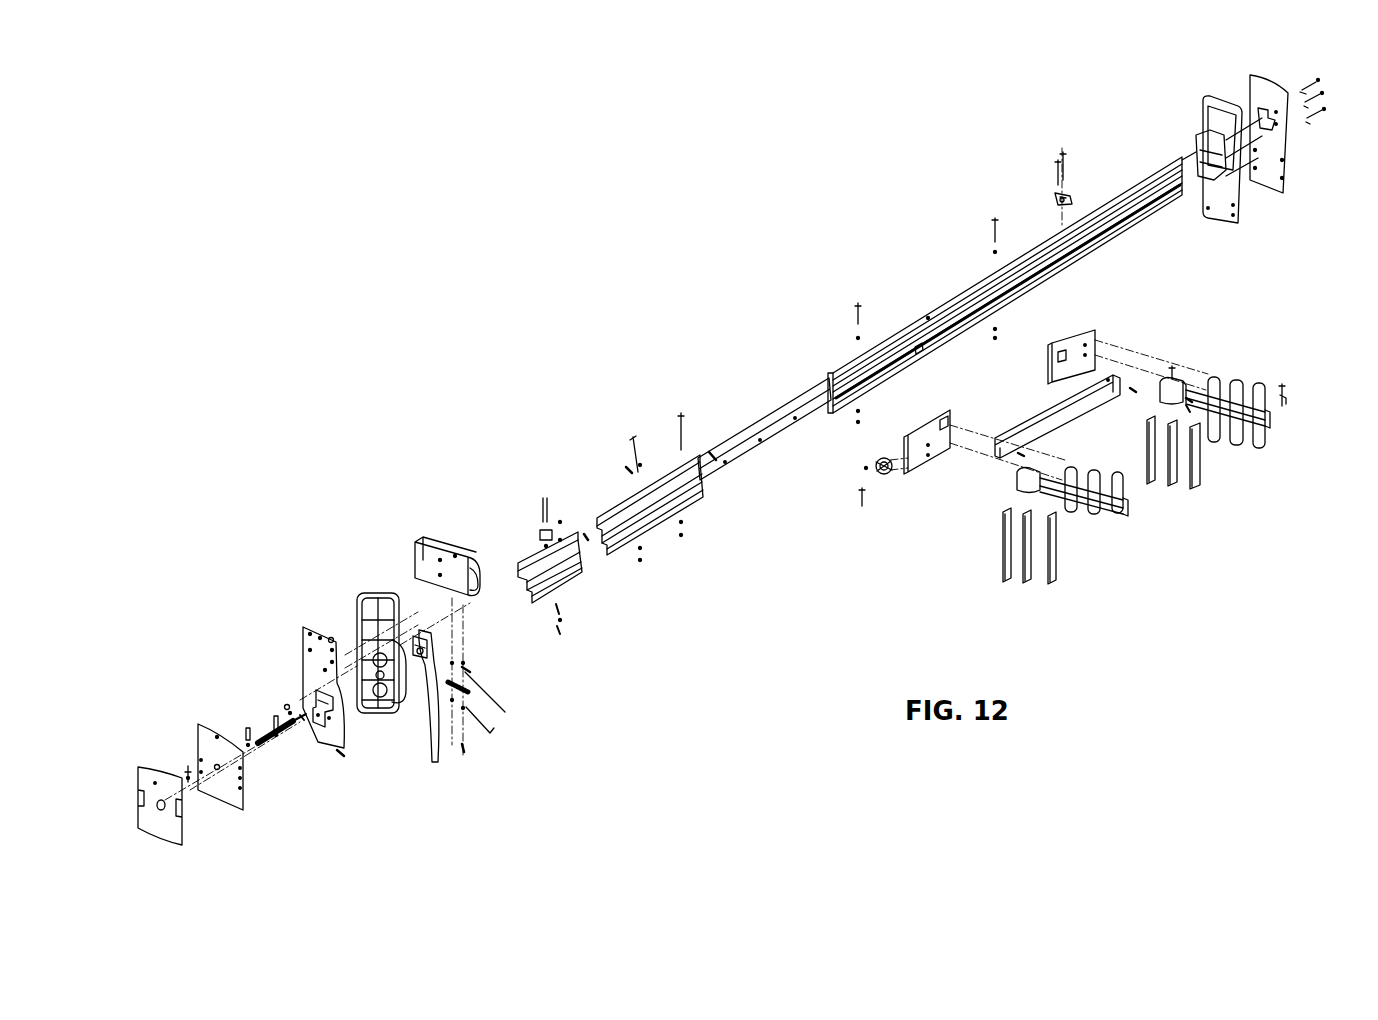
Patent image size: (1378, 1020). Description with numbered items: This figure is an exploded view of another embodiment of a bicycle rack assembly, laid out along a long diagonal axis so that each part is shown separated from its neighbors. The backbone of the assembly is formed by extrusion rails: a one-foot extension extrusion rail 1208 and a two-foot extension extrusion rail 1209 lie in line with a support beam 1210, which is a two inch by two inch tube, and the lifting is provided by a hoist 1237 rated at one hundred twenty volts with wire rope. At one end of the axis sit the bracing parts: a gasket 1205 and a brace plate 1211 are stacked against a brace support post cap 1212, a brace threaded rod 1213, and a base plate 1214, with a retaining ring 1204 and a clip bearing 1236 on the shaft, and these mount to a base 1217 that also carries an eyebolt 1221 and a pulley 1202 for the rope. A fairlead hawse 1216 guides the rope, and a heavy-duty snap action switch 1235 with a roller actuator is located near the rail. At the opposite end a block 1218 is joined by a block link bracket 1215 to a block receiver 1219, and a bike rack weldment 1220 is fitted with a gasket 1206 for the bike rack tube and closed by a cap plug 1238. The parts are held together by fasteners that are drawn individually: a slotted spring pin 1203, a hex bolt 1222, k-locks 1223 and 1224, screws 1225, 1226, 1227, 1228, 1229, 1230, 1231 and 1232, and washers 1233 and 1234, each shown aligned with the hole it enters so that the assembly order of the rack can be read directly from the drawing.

The pulley 1202 is at (419, 655).
The spring pin 1203 is at (587, 537).
The retaining ring 1204 is at (187, 772).
The gasket 1205 is at (157, 768).
The gasket 1206 is at (996, 553).
The extension extrusion rail 1208 is at (537, 563).
The extension extrusion rail 1209 is at (670, 478).
The support beam 1210 is at (782, 410).
The brace plate 1211 is at (217, 737).
The brace support post cap 1212 is at (287, 707).
The brace threaded rod 1213 is at (276, 723).
The base plate 1214 is at (313, 630).
The block link bracket 1215 is at (998, 452).
The fairlead hawse 1216 is at (468, 692).
The base 1217 is at (375, 598).
The block 1218 is at (928, 455).
The block receiver 1219 is at (1168, 378).
The bike rack weldment 1220 is at (1235, 378).
The eyebolt 1221 is at (416, 673).
The hex bolt 1222 is at (633, 437).
The k-lock 1223 is at (557, 623).
The k-lock 1224 is at (300, 767).
The screw 1225 is at (468, 710).
The screw 1226 is at (1132, 390).
The screw 1227 is at (1188, 400).
The screw 1228 is at (462, 730).
The screw 1229 is at (280, 753).
The screw 1230 is at (1317, 107).
The screw 1231 is at (1060, 157).
The screw 1232 is at (330, 637).
The washer 1233 is at (629, 470).
The washer 1234 is at (1053, 178).
The switch 1235 is at (1050, 195).
The clip bearing 1236 is at (248, 733).
The hoist 1237 is at (450, 550).
The cap plug 1238 is at (1280, 378).